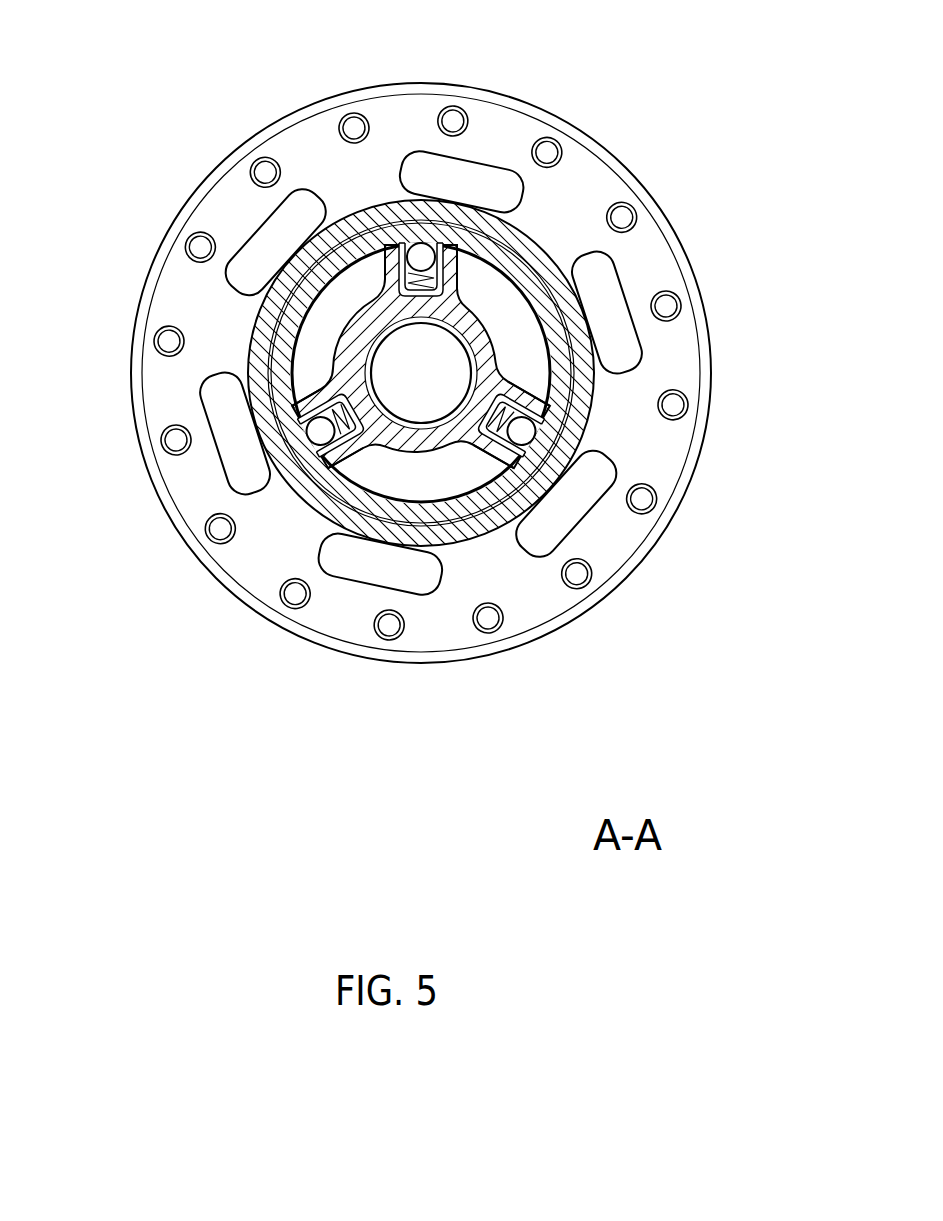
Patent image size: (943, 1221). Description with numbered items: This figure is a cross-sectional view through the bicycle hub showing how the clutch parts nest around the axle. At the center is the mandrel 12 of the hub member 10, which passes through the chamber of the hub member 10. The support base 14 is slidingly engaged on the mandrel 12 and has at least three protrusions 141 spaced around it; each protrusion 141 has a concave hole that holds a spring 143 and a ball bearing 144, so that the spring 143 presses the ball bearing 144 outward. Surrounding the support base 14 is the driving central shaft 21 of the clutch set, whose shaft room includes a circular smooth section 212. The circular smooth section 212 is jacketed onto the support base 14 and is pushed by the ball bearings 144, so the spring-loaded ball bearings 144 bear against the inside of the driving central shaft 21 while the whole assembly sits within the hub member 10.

The hub member 10 is at (674, 162).
The mandrel 12 is at (483, 380).
The support base 14 is at (490, 346).
The protrusions 141 is at (450, 267).
The spring 143 is at (385, 278).
The ball bearing 144 is at (421, 257).
The driving central shaft 21 is at (268, 366).
The circular smooth section 212 is at (292, 391).